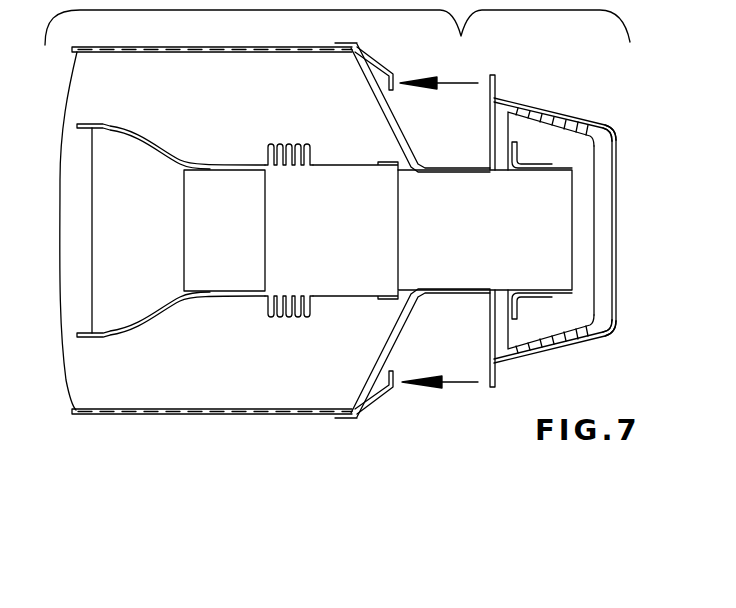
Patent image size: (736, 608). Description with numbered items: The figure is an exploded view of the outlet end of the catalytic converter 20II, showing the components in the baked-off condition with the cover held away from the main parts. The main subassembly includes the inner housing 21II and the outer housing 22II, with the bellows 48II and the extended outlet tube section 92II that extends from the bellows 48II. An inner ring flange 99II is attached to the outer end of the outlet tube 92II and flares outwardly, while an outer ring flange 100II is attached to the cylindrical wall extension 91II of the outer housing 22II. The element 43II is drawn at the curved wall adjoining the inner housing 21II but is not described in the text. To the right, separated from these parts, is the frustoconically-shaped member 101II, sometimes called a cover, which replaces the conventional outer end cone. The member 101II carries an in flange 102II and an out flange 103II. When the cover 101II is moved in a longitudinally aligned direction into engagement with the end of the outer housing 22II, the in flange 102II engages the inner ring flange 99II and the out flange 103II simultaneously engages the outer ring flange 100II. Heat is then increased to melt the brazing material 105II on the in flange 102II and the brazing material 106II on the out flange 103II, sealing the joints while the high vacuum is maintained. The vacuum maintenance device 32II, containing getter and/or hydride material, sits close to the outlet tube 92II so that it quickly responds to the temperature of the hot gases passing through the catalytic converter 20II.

The cylindrical wall extension 91II is at (193, 46).
The outer ring flange 100II is at (377, 50).
The catalytic converter 20II is at (447, 210).
The out flange 103II is at (490, 96).
The frustoconically-shaped member 101II is at (513, 160).
The inner ring flange 99II is at (550, 135).
The vacuum maintenance device 32II is at (556, 152).
The in flange 102II is at (598, 163).
The brazing material 105II is at (598, 162).
The bellows 48II is at (270, 142).
The brazing material 106II is at (490, 88).
The outlet tube 92II is at (456, 174).
The curved wall 43II is at (150, 317).
The inner housing 21II is at (137, 346).
The outer housing 22II is at (296, 423).